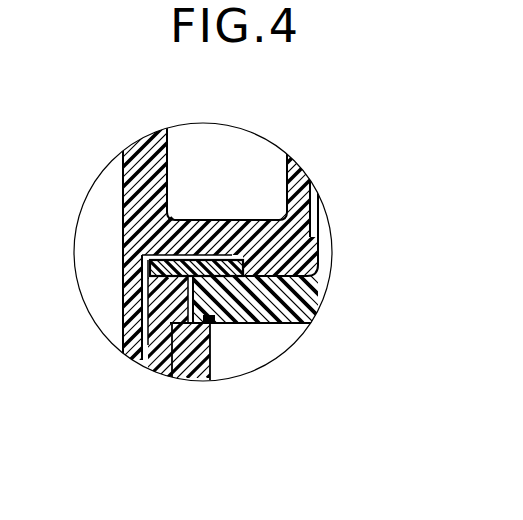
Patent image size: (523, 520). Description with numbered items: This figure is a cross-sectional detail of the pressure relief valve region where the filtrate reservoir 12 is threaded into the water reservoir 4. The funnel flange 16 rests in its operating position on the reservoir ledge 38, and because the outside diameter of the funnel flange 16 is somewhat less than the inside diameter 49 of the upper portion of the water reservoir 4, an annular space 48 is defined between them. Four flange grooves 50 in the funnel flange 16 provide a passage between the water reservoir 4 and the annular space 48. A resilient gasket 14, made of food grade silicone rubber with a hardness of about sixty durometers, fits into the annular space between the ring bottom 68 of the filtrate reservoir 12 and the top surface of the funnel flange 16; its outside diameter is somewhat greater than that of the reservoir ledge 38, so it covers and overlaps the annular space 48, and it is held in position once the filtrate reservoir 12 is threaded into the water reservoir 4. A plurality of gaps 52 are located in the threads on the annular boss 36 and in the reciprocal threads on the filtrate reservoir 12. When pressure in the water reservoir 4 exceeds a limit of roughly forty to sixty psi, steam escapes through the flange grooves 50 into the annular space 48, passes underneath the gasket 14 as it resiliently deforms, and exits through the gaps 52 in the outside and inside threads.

The water reservoir 4 is at (182, 376).
The filtrate reservoir 12 is at (195, 177).
The gasket 14 is at (215, 258).
The funnel flange 16 is at (314, 291).
The annular boss 36 is at (172, 357).
The reservoir ledge 38 is at (225, 290).
The annular space 48 is at (181, 292).
The inside diameter 49 is at (210, 309).
The flange grooves 50 is at (213, 325).
The gaps 52 is at (147, 341).
The ring bottom 68 is at (259, 210).